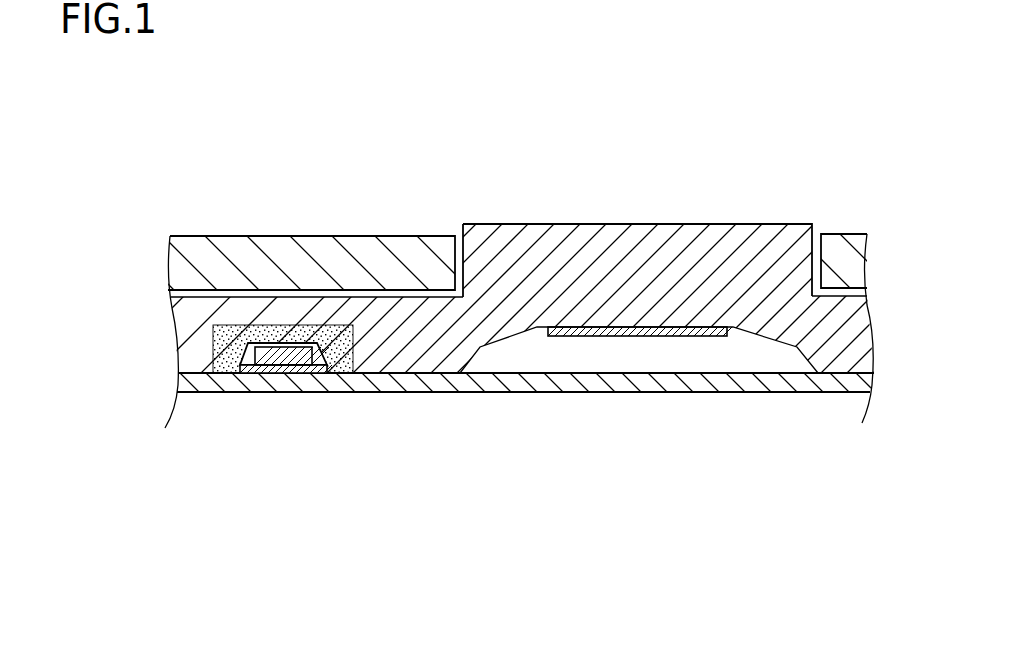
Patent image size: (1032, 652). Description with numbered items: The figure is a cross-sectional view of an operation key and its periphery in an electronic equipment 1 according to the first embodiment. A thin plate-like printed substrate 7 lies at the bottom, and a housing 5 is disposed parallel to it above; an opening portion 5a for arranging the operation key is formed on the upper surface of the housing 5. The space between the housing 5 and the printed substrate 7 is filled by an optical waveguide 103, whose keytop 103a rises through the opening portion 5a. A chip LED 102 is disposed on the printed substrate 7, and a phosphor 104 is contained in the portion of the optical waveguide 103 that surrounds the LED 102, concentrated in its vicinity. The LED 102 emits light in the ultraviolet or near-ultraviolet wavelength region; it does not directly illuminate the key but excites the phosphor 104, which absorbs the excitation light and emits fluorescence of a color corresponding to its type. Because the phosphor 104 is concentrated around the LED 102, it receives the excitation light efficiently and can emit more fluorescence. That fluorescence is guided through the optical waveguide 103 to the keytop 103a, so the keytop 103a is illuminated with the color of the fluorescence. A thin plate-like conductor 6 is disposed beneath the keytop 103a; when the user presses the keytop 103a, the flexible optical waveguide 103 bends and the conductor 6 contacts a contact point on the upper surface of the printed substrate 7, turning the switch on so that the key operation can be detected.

The electronic equipment 1 is at (215, 107).
The housing 5 is at (292, 258).
The opening portion 5a is at (459, 240).
The conductor 6 is at (615, 333).
The printed substrate 7 is at (818, 392).
The LED 102 is at (285, 368).
The optical waveguide 103 is at (428, 360).
The keytop 103a is at (628, 245).
The phosphor 104 is at (341, 353).